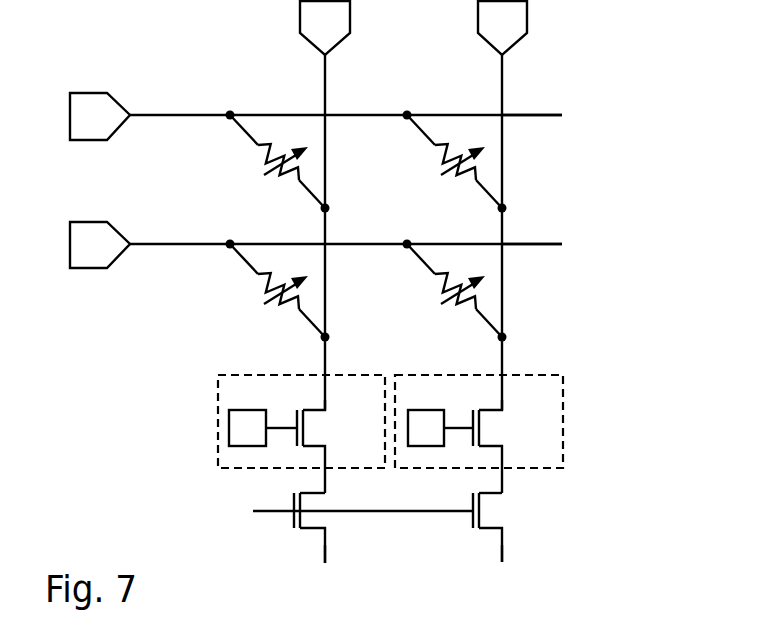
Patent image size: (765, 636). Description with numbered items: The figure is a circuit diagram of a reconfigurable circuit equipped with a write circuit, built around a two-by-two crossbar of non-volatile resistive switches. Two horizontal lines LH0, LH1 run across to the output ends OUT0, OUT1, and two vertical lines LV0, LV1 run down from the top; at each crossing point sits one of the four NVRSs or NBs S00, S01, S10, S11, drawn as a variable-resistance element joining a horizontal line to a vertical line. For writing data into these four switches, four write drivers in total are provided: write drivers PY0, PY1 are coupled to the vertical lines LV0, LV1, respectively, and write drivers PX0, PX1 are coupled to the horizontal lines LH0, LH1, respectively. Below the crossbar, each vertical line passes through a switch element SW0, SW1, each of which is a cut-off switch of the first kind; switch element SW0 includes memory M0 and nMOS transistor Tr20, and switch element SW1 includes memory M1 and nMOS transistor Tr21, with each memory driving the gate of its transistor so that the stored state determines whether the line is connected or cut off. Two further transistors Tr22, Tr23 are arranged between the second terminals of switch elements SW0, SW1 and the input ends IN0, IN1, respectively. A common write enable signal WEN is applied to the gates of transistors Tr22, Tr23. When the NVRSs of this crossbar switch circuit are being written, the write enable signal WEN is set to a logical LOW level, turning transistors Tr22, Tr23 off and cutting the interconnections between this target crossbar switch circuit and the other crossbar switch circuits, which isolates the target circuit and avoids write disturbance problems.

The write driver PX0 is at (100, 116).
The write driver PX1 is at (100, 245).
The write driver PY0 is at (325, 28).
The write driver PY1 is at (502, 28).
The horizontal line LH0 is at (346, 103).
The horizontal line LH1 is at (346, 232).
The vertical line LV0 is at (303, 232).
The vertical line LV1 is at (480, 232).
The output end OUT0 is at (579, 123).
The output end OUT1 is at (579, 252).
The NVRS S00 is at (271, 162).
The NVRS S01 is at (452, 162).
The NVRS S10 is at (268, 291).
The NVRS S11 is at (452, 291).
The switch element SW0 is at (268, 434).
The switch element SW1 is at (513, 434).
The memory M0 is at (247, 414).
The memory M1 is at (426, 414).
The nMOS transistor Tr20 is at (320, 446).
The nMOS transistor Tr21 is at (498, 446).
The transistor Tr22 is at (339, 528).
The transistor Tr23 is at (516, 527).
The write enable signal WEN is at (333, 511).
The input end IN0 is at (328, 573).
The input end IN1 is at (515, 572).